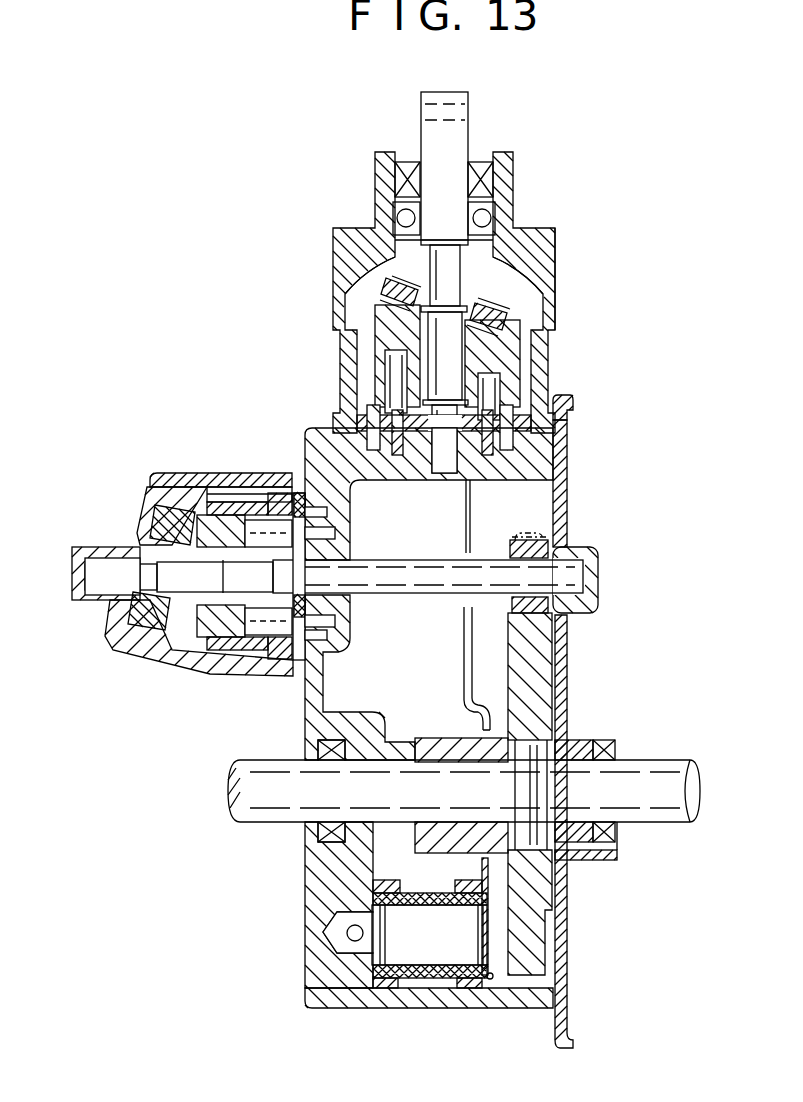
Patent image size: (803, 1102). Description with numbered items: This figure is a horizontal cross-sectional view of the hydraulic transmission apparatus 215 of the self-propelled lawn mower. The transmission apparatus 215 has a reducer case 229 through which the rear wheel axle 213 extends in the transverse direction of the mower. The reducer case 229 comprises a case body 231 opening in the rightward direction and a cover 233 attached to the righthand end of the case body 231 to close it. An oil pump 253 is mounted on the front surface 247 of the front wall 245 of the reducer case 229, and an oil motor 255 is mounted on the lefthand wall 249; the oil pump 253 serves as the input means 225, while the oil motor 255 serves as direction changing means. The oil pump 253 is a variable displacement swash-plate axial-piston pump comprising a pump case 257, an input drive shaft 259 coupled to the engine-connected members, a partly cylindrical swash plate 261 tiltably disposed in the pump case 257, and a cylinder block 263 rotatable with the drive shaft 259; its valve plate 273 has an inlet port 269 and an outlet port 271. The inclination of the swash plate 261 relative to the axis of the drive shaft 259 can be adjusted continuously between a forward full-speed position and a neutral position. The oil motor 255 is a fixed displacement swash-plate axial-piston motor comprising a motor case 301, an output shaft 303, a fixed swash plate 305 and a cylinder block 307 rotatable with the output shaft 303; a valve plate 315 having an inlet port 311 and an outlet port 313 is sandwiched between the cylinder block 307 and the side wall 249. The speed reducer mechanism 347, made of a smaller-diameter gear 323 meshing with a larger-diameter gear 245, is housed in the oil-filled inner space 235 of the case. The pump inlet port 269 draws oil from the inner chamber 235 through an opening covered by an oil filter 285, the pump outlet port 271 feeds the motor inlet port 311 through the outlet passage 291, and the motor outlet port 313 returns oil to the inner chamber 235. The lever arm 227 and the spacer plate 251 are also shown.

The rear wheel axle 213 is at (650, 778).
The transmission apparatus 215 is at (258, 272).
The input means 225 is at (558, 294).
The lever arm 227 is at (182, 672).
The reducer case 229 is at (360, 1015).
The case body 231 is at (315, 970).
The cover 233 is at (567, 955).
The inner space 235 is at (430, 690).
The front wall 245 is at (535, 468).
The front surface 247 is at (565, 417).
The lefthand wall 249 is at (327, 460).
The spacer plate 251 is at (300, 468).
The oil pump 253 is at (562, 240).
The oil motor 255 is at (120, 655).
The pump case 257 is at (340, 241).
The input drive shaft 259 is at (453, 150).
The swash plate 261 is at (522, 292).
The cylinder block 263 is at (537, 352).
The inlet port 269 is at (510, 470).
The outlet port 271 is at (403, 470).
The valve plate 273 is at (548, 376).
The oil filter 285 is at (440, 998).
The outlet passage 291 is at (338, 532).
The motor case 301 is at (183, 474).
The output shaft 303 is at (105, 566).
The fixed swash plate 305 is at (160, 652).
The cylinder block 307 is at (245, 660).
The inlet port 311 is at (334, 576).
The outlet port 313 is at (333, 638).
The valve plate 315 is at (292, 670).
The smaller-diameter gear 323 is at (524, 540).
The speed reducer mechanism 347 is at (548, 647).